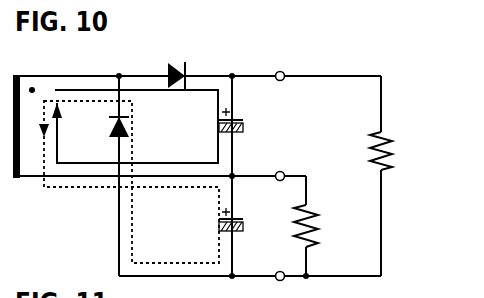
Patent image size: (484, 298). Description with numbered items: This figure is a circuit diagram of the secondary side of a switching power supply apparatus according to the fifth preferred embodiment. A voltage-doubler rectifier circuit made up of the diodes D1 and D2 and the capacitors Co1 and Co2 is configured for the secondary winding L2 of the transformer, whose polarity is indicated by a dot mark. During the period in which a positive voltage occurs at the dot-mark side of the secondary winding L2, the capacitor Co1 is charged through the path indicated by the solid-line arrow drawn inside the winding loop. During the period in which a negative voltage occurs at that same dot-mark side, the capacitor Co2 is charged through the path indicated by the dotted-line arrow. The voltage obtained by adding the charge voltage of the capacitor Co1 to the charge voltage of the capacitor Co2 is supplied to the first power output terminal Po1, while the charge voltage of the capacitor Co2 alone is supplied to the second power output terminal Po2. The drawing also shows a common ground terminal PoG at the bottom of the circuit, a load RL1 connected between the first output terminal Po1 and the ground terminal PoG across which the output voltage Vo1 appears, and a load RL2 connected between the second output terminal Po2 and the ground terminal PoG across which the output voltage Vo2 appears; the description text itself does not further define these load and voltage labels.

The secondary winding L2 is at (24, 116).
The diode D1 is at (179, 64).
The diode D2 is at (105, 126).
The capacitor Co1 is at (246, 117).
The capacitor Co2 is at (246, 218).
The load resistor RL1 is at (397, 151).
The load resistor RL2 is at (322, 226).
The first power output terminal Po1 is at (290, 65).
The second power output terminal Po2 is at (290, 165).
The ground output terminal Po(G) PoG is at (294, 285).
The output voltage Vo1 is at (396, 90).
The output voltage Vo2 is at (321, 189).